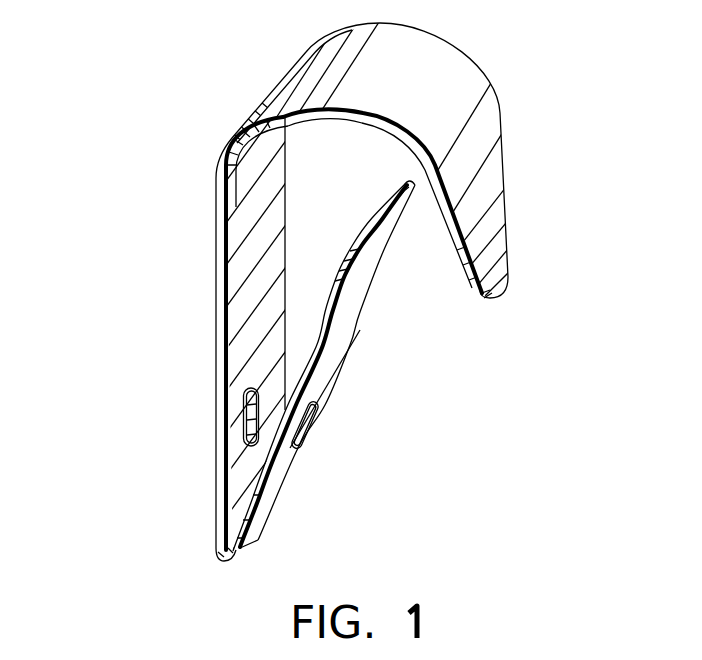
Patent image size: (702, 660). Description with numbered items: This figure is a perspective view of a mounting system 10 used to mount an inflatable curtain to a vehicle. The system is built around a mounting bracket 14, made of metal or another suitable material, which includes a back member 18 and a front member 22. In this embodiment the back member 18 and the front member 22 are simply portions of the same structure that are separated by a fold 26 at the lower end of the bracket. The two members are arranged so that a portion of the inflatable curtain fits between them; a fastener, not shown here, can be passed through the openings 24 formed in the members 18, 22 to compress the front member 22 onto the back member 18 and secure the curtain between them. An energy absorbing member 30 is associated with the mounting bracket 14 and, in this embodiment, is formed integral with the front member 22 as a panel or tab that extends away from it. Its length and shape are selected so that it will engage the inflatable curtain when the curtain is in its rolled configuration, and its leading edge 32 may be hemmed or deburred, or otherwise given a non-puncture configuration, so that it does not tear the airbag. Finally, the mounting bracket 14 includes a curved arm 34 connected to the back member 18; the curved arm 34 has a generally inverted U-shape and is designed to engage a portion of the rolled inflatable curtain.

The mounting system 10 is at (295, 311).
The mounting bracket 14 is at (238, 296).
The back member 18 is at (237, 342).
The front member 22 is at (348, 361).
The openings 24 is at (245, 412).
The fold 26 is at (218, 558).
The energy absorbing member 30 is at (365, 278).
The leading edge 32 is at (385, 205).
The curved arm 34 is at (427, 73).